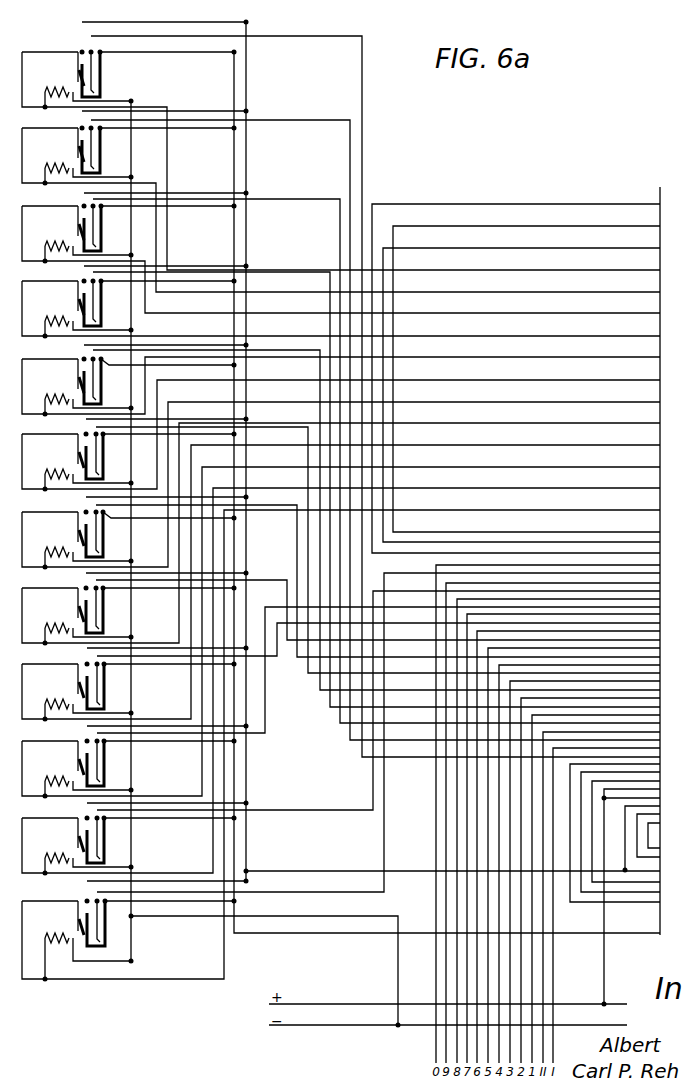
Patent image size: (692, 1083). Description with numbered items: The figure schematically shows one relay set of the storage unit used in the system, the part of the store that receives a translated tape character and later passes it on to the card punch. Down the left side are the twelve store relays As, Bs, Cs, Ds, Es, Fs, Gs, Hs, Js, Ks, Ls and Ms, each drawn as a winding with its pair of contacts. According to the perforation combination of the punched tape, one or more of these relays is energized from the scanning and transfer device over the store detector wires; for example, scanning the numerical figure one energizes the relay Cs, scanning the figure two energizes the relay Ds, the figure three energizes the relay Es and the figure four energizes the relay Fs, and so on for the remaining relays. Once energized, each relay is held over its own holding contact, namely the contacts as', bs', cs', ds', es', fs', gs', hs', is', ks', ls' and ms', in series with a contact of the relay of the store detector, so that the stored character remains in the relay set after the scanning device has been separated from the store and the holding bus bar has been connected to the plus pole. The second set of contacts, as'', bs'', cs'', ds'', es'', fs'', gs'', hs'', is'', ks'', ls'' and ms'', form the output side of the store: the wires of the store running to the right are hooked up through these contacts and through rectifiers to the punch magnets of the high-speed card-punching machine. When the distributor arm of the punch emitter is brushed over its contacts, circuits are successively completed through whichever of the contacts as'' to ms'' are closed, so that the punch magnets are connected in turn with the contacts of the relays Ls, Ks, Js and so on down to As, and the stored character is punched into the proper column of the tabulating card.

The store relay As is at (47, 91).
The holding contact as' is at (62, 69).
The punch-circuit contact as'' is at (111, 74).
The store relay Bs is at (47, 167).
The holding contact bs' is at (62, 145).
The punch-circuit contact bs'' is at (111, 150).
The store relay Cs is at (47, 245).
The holding contact cs' is at (62, 223).
The punch-circuit contact cs'' is at (111, 228).
The store relay Ds is at (47, 320).
The holding contact ds' is at (62, 298).
The punch-circuit contact ds'' is at (112, 303).
The store relay Es is at (47, 398).
The holding contact es' is at (62, 376).
The punch-circuit contact es'' is at (112, 381).
The store relay Fs is at (47, 473).
The holding contact fs' is at (65, 441).
The punch-circuit contact fs'' is at (111, 456).
The store relay Gs is at (47, 551).
The holding contact gs' is at (65, 519).
The punch-circuit contact gs'' is at (113, 534).
The store relay Hs is at (47, 627).
The holding contact hs' is at (65, 595).
The punch-circuit contact hs'' is at (113, 610).
The store relay Js is at (47, 703).
The holding contact is' is at (66, 671).
The punch-circuit contact is'' is at (110, 686).
The store relay Ks is at (47, 780).
The holding contact ks' is at (65, 748).
The punch-circuit contact ks'' is at (113, 763).
The store relay Ls is at (47, 857).
The holding contact ls' is at (65, 825).
The punch-circuit contact ls'' is at (110, 840).
The store relay Ms is at (47, 937).
The holding contact ms' is at (64, 908).
The punch-circuit contact ms'' is at (117, 923).